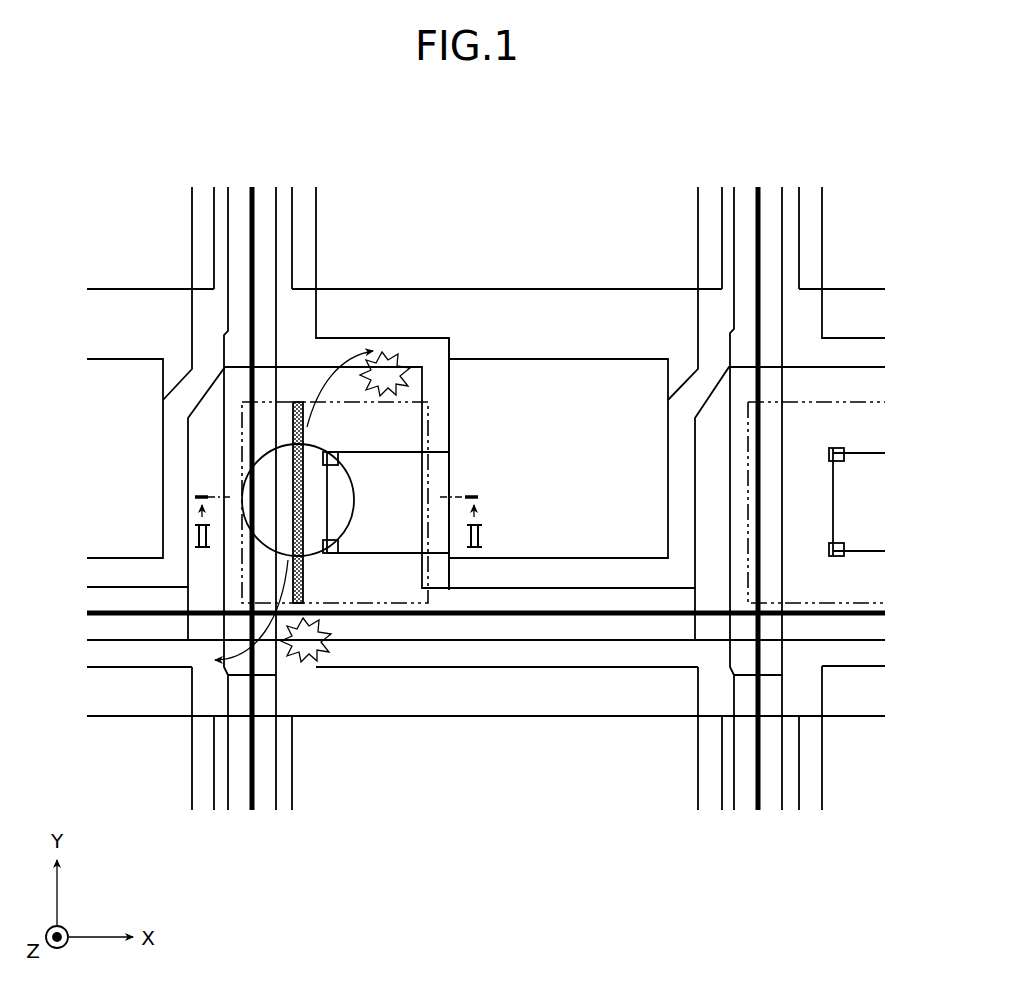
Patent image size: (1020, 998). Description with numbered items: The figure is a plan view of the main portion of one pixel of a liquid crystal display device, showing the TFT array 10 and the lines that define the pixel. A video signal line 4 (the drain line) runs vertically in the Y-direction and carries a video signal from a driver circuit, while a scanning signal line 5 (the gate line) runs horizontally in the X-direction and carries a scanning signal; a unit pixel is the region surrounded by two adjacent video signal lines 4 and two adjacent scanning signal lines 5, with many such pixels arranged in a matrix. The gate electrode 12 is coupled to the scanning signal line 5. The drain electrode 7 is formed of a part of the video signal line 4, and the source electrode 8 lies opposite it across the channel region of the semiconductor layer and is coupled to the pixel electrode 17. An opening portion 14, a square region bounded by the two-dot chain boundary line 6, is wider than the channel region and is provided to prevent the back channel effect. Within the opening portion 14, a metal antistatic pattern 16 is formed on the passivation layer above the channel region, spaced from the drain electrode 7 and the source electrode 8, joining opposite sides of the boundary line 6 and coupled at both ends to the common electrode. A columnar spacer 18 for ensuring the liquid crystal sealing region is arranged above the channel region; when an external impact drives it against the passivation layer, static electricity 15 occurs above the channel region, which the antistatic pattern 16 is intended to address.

The video signal line 4 is at (227, 182).
The scanning signal line 5 is at (73, 586).
The boundary line 6 is at (432, 434).
The drain electrode 7 is at (267, 483).
The source electrode 8 is at (386, 530).
The TFT array 10 is at (594, 172).
The gate electrode 12 is at (202, 447).
The opening portion 14 is at (410, 420).
The static electricity 15 is at (393, 359).
The antistatic pattern 16 is at (308, 425).
The pixel electrode 17 is at (580, 375).
The columnar spacer 18 is at (350, 487).